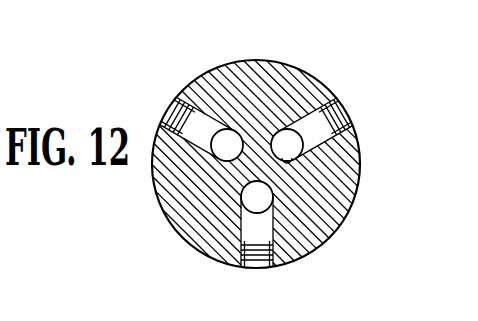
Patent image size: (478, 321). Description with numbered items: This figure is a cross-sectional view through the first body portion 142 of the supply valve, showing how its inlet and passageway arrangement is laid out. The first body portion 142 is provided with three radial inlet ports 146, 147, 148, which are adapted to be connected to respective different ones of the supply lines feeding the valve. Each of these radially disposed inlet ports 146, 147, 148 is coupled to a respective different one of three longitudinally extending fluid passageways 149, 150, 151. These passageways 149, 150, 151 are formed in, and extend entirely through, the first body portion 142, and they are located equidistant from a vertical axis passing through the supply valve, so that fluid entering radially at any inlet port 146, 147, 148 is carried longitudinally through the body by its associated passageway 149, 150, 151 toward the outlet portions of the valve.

The first body portion 142 is at (348, 164).
The radial inlet port 146 is at (167, 108).
The radial inlet port 147 is at (258, 262).
The radial inlet port 148 is at (345, 106).
The longitudinally extending fluid passageway 149 is at (232, 135).
The longitudinally extending fluid passageway 150 is at (245, 213).
The longitudinally extending fluid passageway 151 is at (290, 160).